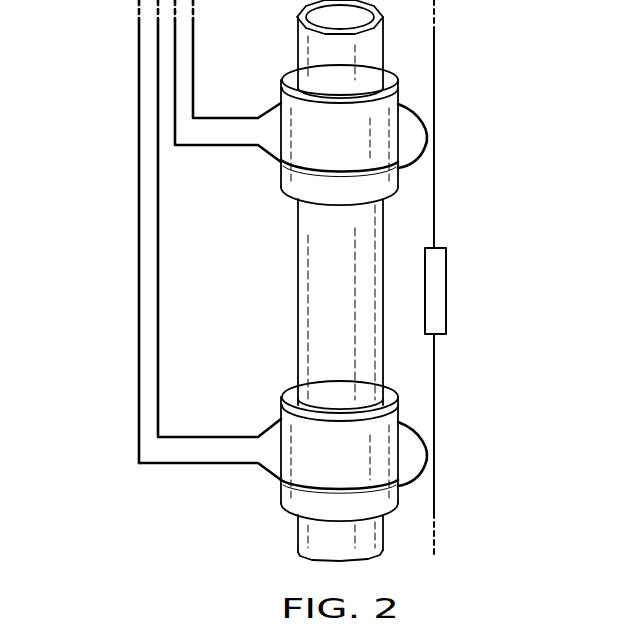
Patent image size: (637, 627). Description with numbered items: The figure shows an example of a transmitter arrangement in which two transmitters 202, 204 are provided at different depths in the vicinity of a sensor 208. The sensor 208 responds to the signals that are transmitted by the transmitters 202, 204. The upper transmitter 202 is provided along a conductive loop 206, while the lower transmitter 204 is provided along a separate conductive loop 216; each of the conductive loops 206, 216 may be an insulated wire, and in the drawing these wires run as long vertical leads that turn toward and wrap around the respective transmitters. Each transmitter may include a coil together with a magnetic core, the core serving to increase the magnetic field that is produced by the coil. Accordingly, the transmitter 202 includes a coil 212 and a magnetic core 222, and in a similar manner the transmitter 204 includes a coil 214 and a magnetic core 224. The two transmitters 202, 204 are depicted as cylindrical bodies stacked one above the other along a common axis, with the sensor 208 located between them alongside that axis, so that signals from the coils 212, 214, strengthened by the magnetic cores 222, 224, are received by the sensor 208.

The transmitter 202 is at (458, 62).
The transmitter 204 is at (458, 378).
The conductive loop 206 is at (196, 46).
The sensor 208 is at (447, 290).
The coil 212 is at (210, 147).
The coil 214 is at (192, 465).
The conductive loop 216 is at (138, 252).
The magnetic core 222 is at (281, 98).
The magnetic core 224 is at (281, 418).